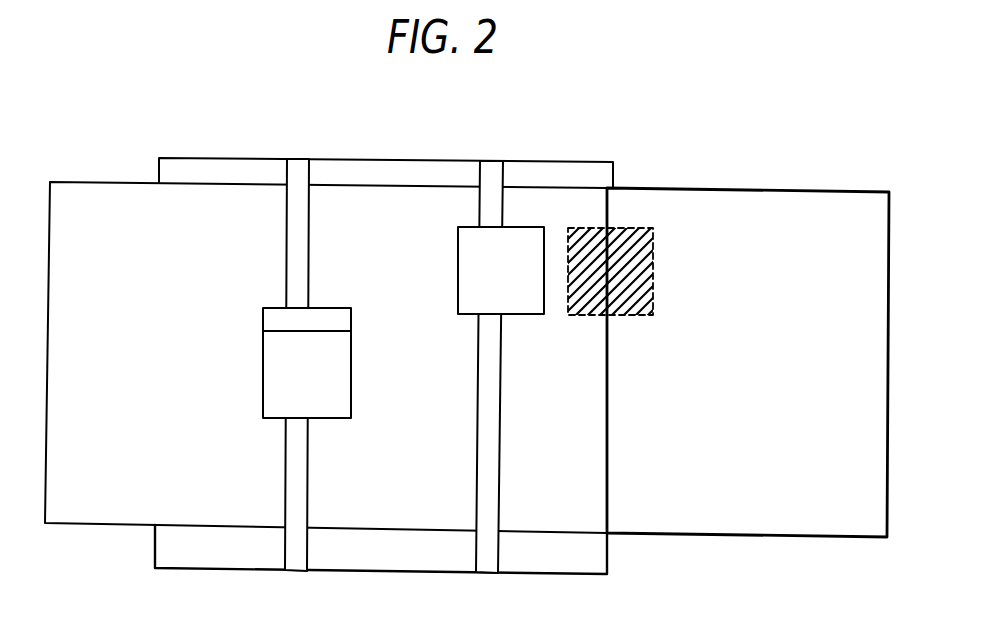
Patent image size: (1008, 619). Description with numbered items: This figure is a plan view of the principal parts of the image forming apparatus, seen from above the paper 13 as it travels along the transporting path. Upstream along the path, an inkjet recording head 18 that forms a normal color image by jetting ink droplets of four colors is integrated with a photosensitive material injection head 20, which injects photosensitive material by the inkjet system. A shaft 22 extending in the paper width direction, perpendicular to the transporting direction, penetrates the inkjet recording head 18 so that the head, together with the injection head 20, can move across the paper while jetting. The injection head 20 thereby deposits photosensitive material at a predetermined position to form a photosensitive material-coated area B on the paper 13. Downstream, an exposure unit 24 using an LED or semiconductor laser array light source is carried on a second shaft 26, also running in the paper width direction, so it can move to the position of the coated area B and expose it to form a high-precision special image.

The paper 13 is at (99, 197).
The inkjet recording head 18 is at (342, 364).
The photosensitive material injection head 20 is at (342, 320).
The shaft 22 is at (302, 216).
The exposure unit 24 is at (472, 266).
The shaft 26 is at (493, 410).
The photosensitive material-coated area B is at (655, 266).